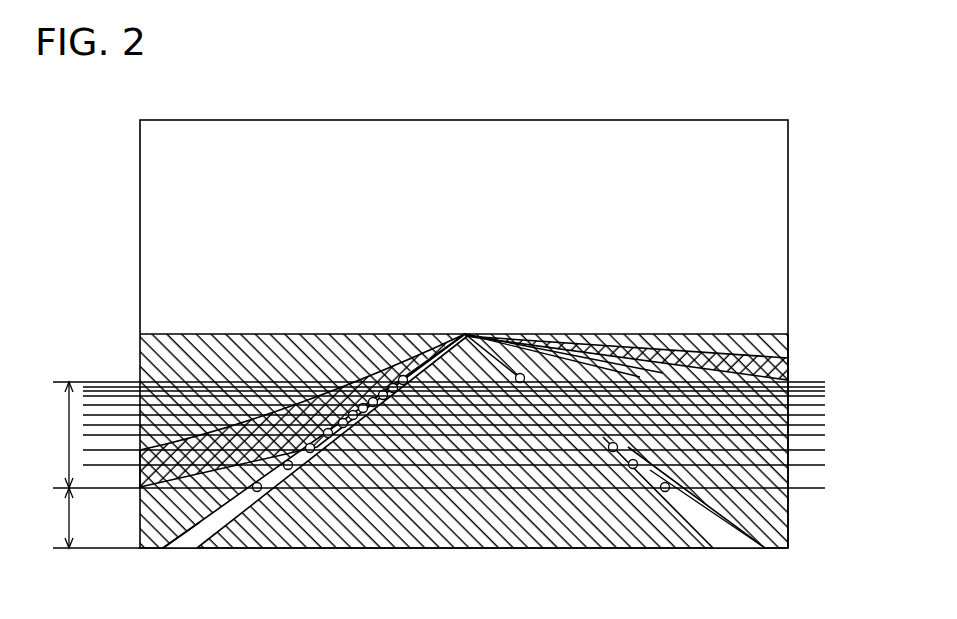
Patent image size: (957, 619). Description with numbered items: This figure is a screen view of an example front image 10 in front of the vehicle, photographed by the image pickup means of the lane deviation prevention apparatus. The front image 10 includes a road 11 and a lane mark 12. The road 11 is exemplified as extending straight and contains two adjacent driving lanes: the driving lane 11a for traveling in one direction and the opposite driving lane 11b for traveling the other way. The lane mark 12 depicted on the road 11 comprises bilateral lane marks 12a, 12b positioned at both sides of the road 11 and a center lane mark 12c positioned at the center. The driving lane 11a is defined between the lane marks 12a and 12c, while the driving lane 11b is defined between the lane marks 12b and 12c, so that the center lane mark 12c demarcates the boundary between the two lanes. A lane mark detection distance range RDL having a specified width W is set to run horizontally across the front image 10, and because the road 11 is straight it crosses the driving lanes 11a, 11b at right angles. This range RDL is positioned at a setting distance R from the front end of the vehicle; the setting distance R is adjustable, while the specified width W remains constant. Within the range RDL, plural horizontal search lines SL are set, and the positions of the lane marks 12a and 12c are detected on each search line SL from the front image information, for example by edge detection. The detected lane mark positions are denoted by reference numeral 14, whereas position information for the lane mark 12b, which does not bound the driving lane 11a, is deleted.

The front image 10 is at (773, 225).
The road 11 is at (545, 338).
The driving lane 11a is at (473, 540).
The driving lane 11b is at (770, 528).
The lane mark 12 is at (430, 347).
The bilateral lane mark 12a is at (187, 540).
The bilateral lane mark 12b is at (635, 340).
The center lane mark 12c is at (737, 537).
The lane mark positions 14 is at (390, 332).
The lane mark detection distance range RDL is at (838, 375).
The search lines SL is at (807, 466).
The specified width W is at (56, 435).
The setting distance R is at (92, 518).